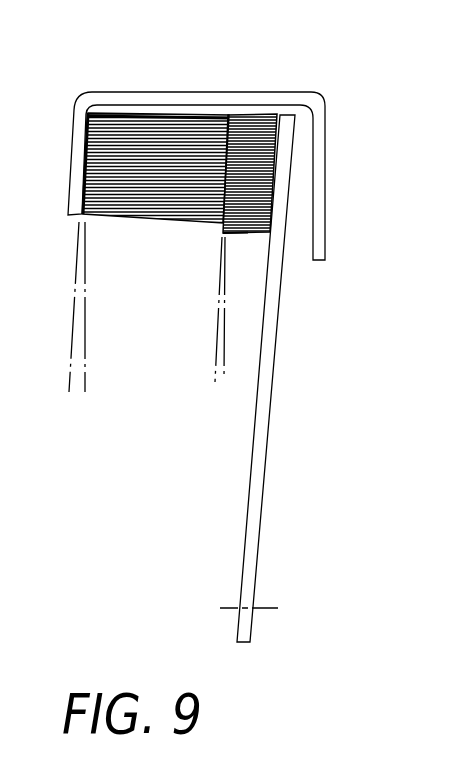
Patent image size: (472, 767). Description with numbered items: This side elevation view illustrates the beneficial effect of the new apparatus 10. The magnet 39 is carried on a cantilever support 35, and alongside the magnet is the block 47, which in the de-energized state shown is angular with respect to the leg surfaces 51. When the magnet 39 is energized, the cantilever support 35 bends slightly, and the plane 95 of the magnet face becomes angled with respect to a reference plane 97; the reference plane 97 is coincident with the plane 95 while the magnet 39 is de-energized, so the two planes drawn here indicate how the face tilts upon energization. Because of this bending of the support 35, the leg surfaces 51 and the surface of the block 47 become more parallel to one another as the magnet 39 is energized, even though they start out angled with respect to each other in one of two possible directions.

The apparatus 10 is at (132, 66).
The cantilever support 35 is at (233, 93).
The magnet 39 is at (163, 128).
The block 47 is at (250, 236).
The leg surfaces 51 is at (222, 229).
The plane of the magnet face 95 is at (217, 337).
The reference plane 97 is at (226, 349).